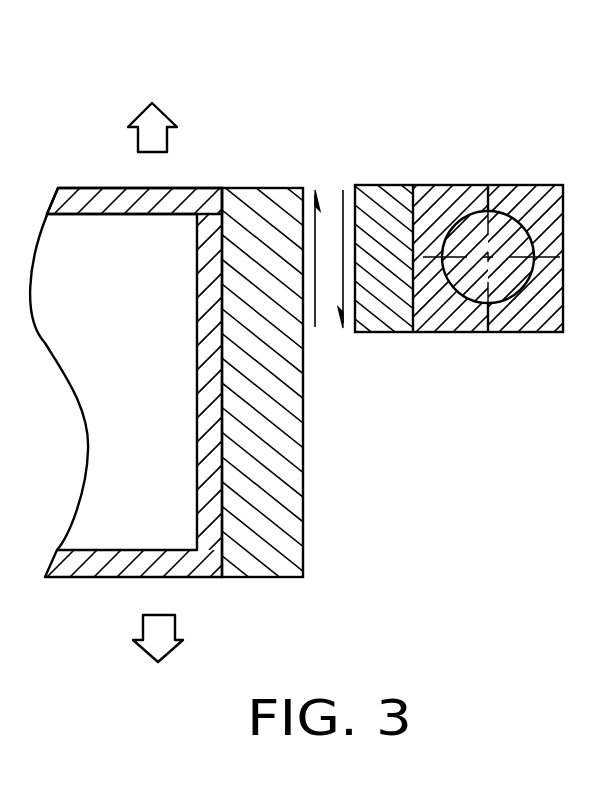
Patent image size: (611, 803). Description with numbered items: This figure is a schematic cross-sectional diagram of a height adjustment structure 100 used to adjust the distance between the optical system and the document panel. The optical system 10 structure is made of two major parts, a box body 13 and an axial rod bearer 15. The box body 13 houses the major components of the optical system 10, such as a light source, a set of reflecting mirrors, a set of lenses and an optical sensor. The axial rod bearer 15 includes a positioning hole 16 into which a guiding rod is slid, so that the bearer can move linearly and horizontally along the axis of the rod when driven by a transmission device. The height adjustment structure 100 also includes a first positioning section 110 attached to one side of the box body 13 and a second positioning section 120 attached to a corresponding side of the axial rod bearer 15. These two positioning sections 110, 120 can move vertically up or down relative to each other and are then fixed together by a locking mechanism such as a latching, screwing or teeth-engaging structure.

The optical system 10 is at (492, 47).
The box body 13 is at (198, 190).
The axial rod bearer 15 is at (435, 187).
The positioning hole 16 is at (504, 248).
The height adjustment structure 100 is at (462, 430).
The first positioning section 110 is at (288, 478).
The second positioning section 120 is at (386, 322).